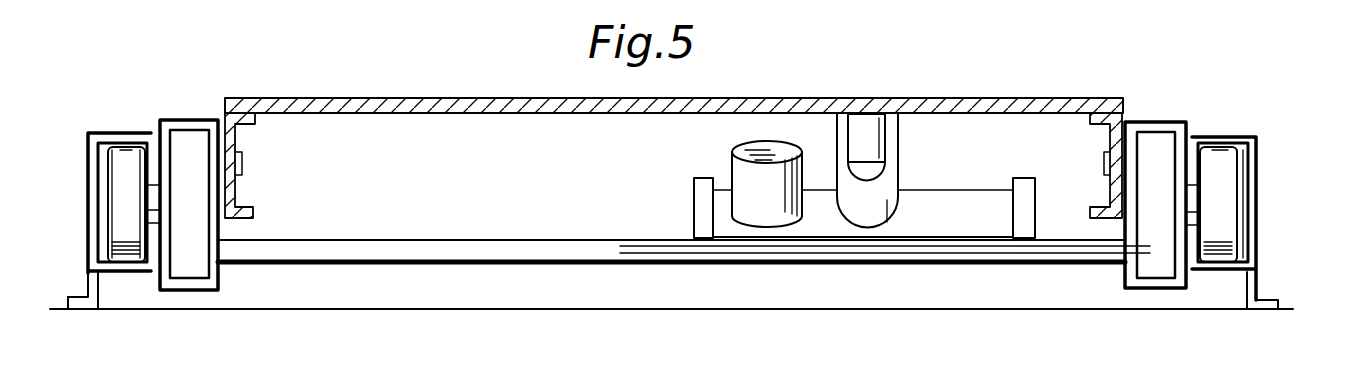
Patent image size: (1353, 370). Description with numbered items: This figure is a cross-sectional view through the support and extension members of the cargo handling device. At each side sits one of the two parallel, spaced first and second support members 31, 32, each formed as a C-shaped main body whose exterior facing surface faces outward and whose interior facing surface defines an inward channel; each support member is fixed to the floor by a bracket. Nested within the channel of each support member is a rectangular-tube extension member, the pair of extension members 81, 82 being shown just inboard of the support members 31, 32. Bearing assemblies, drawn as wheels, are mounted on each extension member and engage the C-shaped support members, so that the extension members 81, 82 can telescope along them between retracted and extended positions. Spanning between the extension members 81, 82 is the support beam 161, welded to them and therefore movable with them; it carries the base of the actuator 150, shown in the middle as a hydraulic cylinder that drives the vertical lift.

The first support member 31 is at (133, 142).
The second support member 32 is at (1258, 150).
The extension member 81 is at (200, 130).
The extension member 82 is at (1160, 128).
The actuator 150 is at (896, 202).
The support beam 161 is at (505, 224).